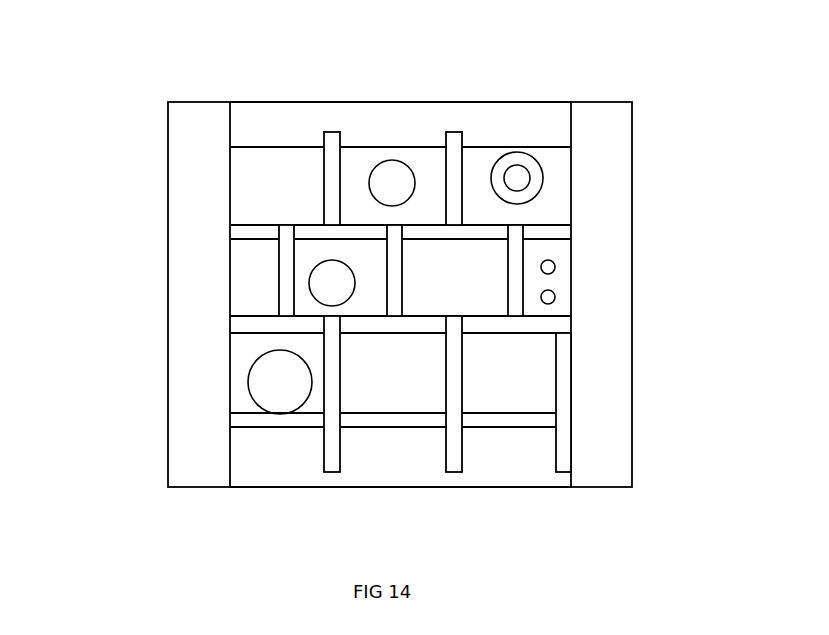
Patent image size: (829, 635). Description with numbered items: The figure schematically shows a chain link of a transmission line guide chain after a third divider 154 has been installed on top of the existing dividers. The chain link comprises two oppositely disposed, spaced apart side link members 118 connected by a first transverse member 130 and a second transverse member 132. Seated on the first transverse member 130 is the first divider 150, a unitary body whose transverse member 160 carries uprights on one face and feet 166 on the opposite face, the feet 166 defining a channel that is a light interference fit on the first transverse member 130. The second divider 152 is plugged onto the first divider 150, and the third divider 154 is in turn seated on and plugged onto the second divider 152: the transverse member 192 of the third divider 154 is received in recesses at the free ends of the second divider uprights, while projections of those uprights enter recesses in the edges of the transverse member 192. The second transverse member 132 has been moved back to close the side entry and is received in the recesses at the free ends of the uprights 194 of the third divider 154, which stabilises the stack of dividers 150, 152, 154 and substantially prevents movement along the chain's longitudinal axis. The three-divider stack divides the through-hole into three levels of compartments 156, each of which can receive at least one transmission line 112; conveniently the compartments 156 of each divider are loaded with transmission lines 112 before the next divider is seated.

The transmission line 112 is at (492, 164).
The side link member 118 is at (168, 275).
The first transverse member 130 is at (342, 490).
The second transverse member 132 is at (296, 102).
The first divider 150 is at (322, 449).
The second divider 152 is at (213, 333).
The third divider 154 is at (557, 222).
The compartment 156 is at (306, 214).
The transverse member 160 is at (240, 410).
The feet 166 is at (557, 462).
The transverse member 192 is at (247, 223).
The uprights 194 is at (447, 132).